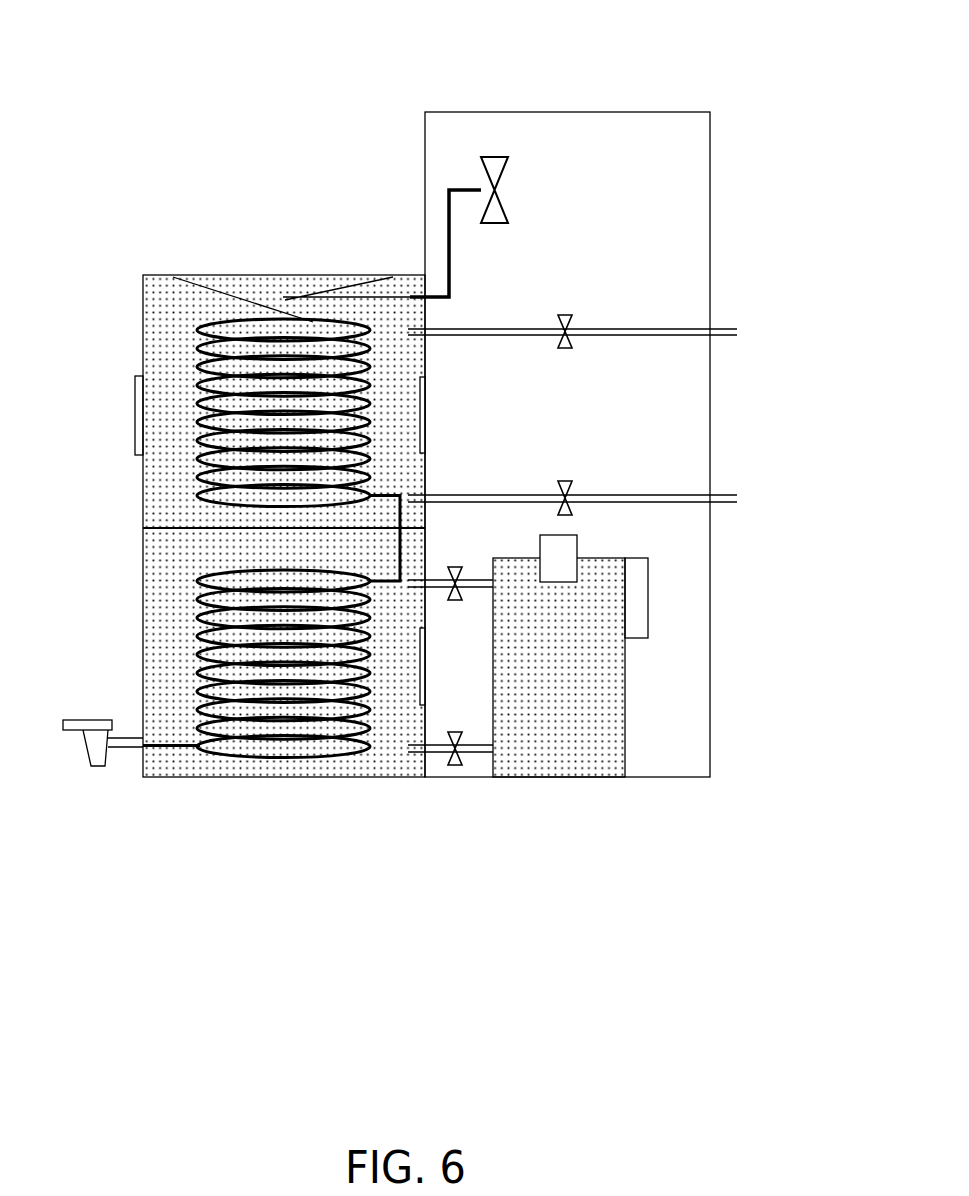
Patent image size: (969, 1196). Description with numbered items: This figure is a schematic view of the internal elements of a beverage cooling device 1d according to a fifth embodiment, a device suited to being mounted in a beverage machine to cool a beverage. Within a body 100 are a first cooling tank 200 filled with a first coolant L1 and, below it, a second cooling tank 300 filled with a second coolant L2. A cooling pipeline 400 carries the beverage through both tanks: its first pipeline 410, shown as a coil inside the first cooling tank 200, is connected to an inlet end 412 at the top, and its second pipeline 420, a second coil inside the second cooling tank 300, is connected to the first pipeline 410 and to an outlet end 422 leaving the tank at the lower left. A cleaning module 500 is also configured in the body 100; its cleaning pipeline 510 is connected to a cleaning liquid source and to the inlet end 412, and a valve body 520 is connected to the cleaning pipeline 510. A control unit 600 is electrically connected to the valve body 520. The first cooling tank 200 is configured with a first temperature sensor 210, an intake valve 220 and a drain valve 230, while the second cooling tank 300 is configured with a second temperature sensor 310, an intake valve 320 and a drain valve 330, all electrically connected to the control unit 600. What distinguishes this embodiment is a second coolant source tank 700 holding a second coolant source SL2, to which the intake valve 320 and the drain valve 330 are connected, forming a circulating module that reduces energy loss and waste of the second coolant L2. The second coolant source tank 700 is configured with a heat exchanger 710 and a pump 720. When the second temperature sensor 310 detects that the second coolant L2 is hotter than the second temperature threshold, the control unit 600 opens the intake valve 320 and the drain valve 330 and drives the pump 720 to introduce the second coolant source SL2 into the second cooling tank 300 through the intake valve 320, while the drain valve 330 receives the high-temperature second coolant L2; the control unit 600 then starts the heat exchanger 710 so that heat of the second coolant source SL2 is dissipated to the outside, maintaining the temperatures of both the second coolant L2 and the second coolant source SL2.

The beverage cooling device 1d is at (67, 33).
The body 100 is at (680, 198).
The first cooling tank 200 is at (601, 381).
The first temperature sensor 210 is at (425, 408).
The intake valve 220 is at (570, 318).
The drain valve 230 is at (570, 482).
The second cooling tank 300 is at (568, 677).
The second temperature sensor 310 is at (423, 682).
The intake valve 320 is at (458, 600).
The drain valve 330 is at (452, 770).
The cooling pipeline 400 is at (227, 644).
The first pipeline 410 is at (200, 338).
The inlet end 412 is at (256, 276).
The second pipeline 420 is at (200, 585).
The outlet end 422 is at (92, 763).
The cleaning module 500 is at (381, 223).
The cleaning pipeline 510 is at (448, 218).
The valve body 520 is at (488, 168).
The control unit 600 is at (135, 412).
The second coolant source tank 700 is at (625, 728).
The heat exchanger 710 is at (637, 615).
The pump 720 is at (555, 562).
The first coolant L1 is at (176, 501).
The second coolant L2 is at (176, 673).
The second coolant source SL2 is at (572, 754).